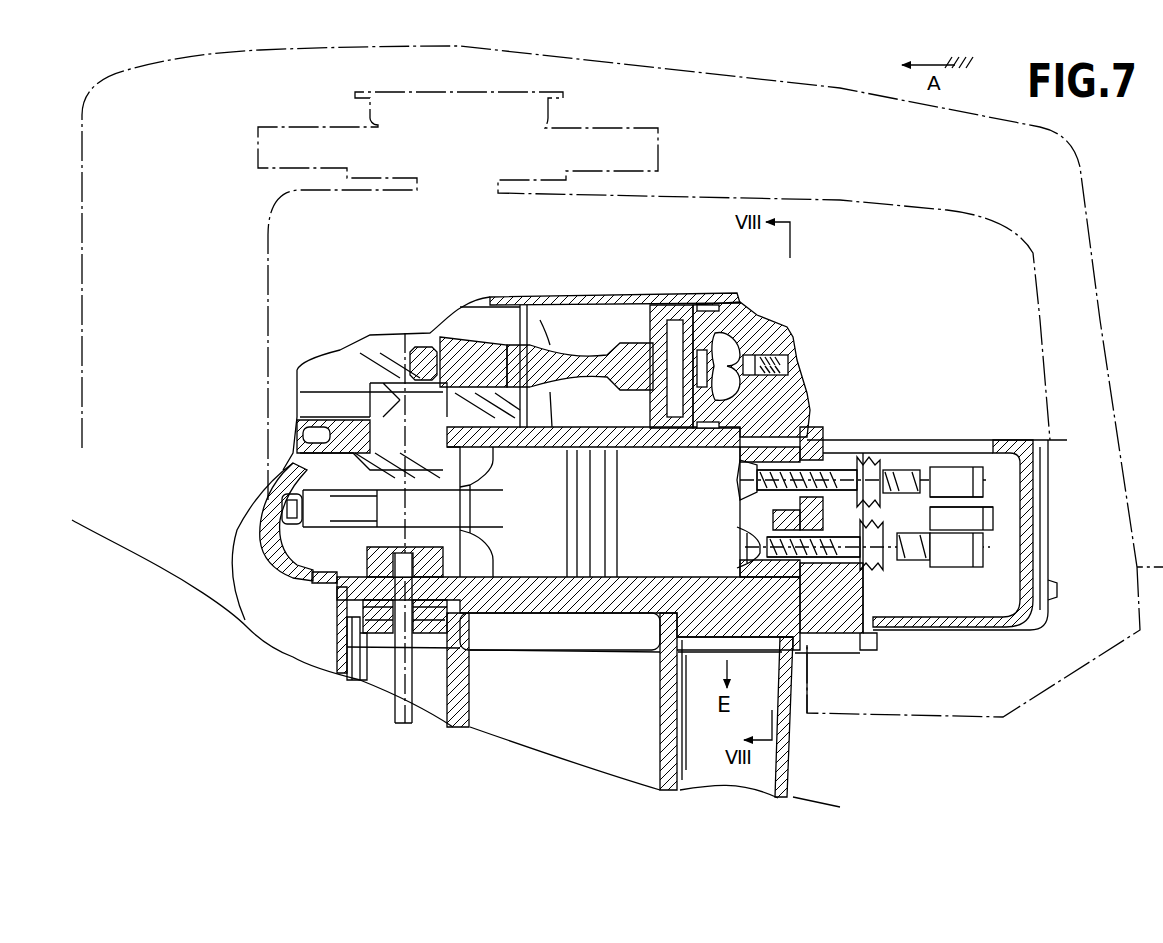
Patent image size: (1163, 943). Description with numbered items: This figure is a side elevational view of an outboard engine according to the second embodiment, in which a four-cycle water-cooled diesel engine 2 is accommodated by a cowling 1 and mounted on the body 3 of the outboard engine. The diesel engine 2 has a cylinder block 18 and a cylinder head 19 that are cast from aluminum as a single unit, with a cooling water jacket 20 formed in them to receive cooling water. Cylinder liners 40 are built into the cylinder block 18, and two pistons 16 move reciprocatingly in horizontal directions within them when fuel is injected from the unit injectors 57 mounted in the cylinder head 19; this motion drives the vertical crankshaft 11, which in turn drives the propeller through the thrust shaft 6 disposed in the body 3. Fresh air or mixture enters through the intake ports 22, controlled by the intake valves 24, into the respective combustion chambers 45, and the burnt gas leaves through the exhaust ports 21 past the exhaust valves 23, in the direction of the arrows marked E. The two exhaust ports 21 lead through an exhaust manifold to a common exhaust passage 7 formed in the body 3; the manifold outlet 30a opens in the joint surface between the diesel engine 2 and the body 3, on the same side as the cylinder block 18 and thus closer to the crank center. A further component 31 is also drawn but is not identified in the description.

The cowling 1 is at (1106, 330).
The diesel engine 2 is at (1039, 266).
The body of the outboard engine 3 is at (838, 765).
The thrust shaft 6 is at (397, 685).
The exhaust passage 7 is at (760, 777).
The crankshaft 11 is at (410, 393).
The pistons 16 is at (613, 447).
The cylinder block 18 is at (583, 300).
The cylinder head 19 is at (760, 320).
The cooling water jacket 20 is at (873, 642).
The exhaust ports 21 is at (806, 453).
The intake ports 22 is at (793, 613).
The exhaust valves 23 is at (783, 462).
The intake valves 24 is at (737, 547).
The outlet of the exhaust manifold 30a is at (757, 650).
The gear 31 is at (983, 480).
The cylinder liners 40 is at (573, 447).
The combustion chambers 45 is at (737, 312).
The unit injectors 57 is at (735, 338).